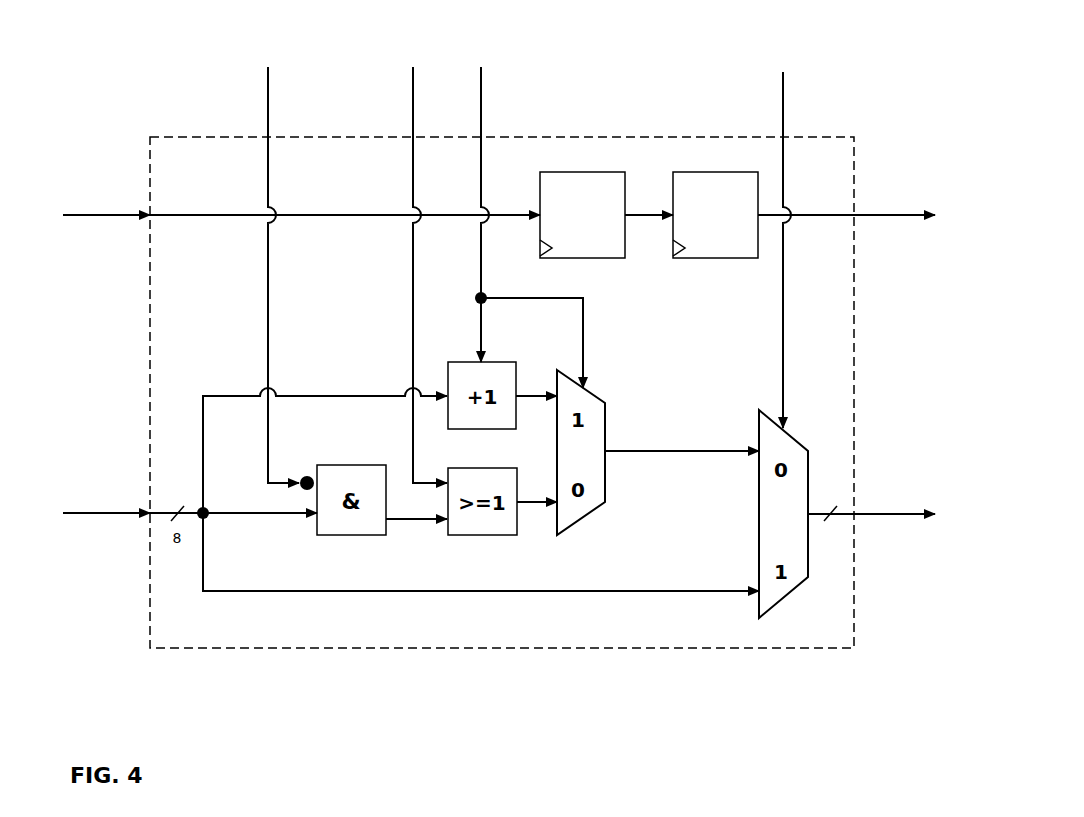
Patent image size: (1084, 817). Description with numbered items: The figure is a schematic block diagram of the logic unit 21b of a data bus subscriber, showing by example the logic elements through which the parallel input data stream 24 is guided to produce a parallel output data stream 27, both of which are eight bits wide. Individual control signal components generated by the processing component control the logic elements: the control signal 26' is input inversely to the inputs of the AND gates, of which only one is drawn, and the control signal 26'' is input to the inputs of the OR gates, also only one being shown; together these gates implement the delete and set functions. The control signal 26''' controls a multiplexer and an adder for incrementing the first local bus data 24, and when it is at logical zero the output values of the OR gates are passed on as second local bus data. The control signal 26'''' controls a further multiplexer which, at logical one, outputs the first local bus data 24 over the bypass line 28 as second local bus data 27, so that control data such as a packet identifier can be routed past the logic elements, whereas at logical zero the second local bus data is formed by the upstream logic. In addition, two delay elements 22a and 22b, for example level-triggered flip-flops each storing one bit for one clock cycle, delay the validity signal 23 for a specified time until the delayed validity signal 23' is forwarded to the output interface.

The logic unit 21b is at (520, 649).
The delay element 22a is at (582, 215).
The delay element 22b is at (715, 215).
The validity signal 23 is at (106, 184).
The delayed validity signal 23' is at (846, 184).
The parallel input data stream 24 is at (108, 514).
The control signal component 26' is at (293, 266).
The control signal component 26'' is at (410, 263).
The control signal component 26''' is at (529, 215).
The control signal component 26'''' is at (810, 235).
The parallel output data stream 27 is at (870, 514).
The bypass line 28 is at (680, 591).